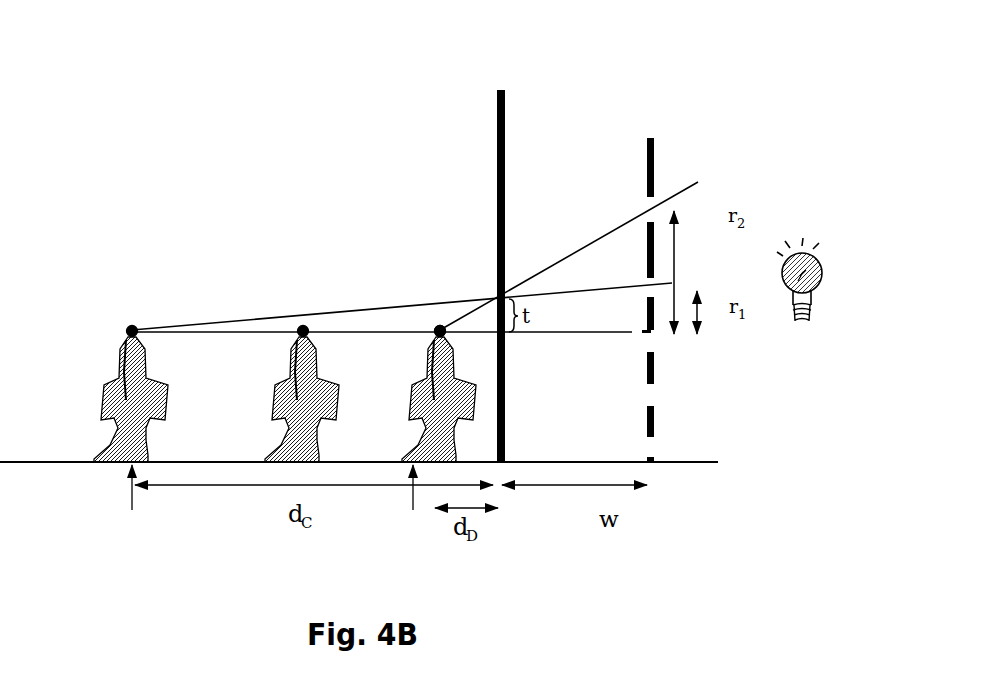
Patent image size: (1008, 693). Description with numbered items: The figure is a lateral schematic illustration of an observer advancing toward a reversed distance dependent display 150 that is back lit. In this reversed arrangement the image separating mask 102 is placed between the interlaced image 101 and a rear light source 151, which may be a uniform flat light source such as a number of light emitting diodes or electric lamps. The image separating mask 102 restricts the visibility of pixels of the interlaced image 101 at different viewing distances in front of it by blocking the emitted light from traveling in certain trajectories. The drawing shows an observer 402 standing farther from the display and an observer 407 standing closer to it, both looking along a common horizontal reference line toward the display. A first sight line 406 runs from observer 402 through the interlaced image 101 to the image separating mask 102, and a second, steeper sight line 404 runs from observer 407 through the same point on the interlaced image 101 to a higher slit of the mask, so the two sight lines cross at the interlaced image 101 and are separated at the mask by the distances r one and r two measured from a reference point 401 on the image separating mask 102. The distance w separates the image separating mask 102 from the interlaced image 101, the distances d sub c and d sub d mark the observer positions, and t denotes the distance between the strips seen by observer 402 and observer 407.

The reversed distance dependent display 150 is at (292, 127).
The interlaced image 101 is at (500, 88).
The image separating mask 102 is at (650, 134).
The sight line from object to display 404 is at (706, 170).
The sight line from distant object to display 406 is at (637, 280).
The observer 407 is at (437, 322).
The observer 402 is at (113, 334).
The point on display 401 is at (652, 338).
The light source 151 is at (807, 238).